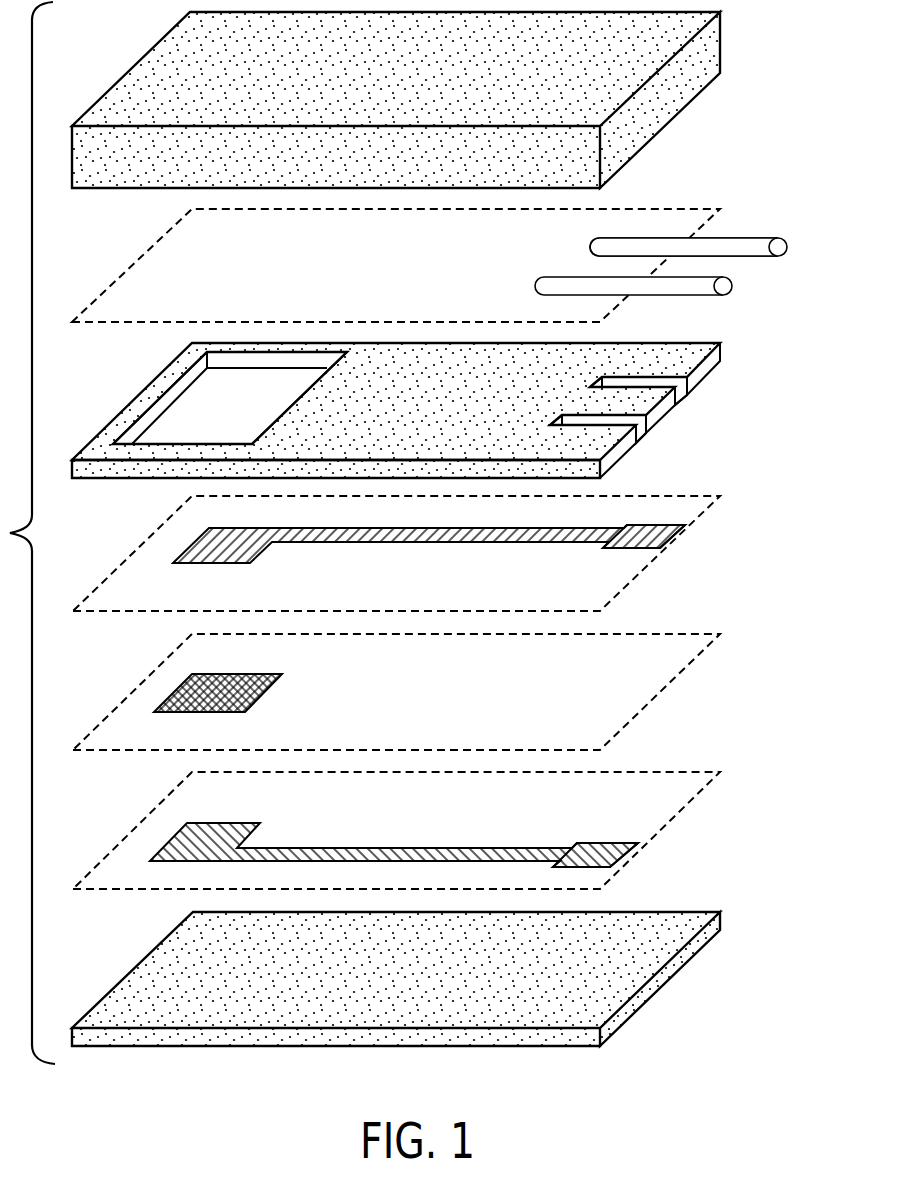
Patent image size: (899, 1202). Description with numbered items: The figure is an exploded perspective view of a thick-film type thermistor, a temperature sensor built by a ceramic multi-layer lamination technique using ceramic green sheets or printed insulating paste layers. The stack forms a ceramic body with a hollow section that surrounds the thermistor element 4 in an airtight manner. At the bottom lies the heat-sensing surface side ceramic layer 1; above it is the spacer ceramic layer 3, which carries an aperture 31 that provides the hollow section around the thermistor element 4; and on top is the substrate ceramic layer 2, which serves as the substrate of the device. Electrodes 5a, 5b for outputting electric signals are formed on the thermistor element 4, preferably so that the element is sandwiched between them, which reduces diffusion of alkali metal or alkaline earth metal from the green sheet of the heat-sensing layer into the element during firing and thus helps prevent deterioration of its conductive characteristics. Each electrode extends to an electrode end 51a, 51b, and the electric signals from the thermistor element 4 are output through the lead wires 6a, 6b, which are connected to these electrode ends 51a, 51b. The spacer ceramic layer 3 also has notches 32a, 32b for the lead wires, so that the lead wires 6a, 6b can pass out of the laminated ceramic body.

The heat-sensing surface side ceramic layer 1 is at (138, 966).
The substrate ceramic layer 2 is at (672, 100).
The spacer ceramic layer 3 is at (421, 404).
The aperture 31 is at (197, 398).
The notch for lead wire 32a is at (640, 410).
The notch for lead wire 32b is at (680, 374).
The thermistor element 4 is at (263, 689).
The electrode 5a is at (394, 829).
The electrode 5b is at (457, 561).
The electrode end 51a is at (606, 843).
The electrode end 51b is at (676, 534).
The lead wire 6a is at (690, 297).
The lead wire 6b is at (737, 238).